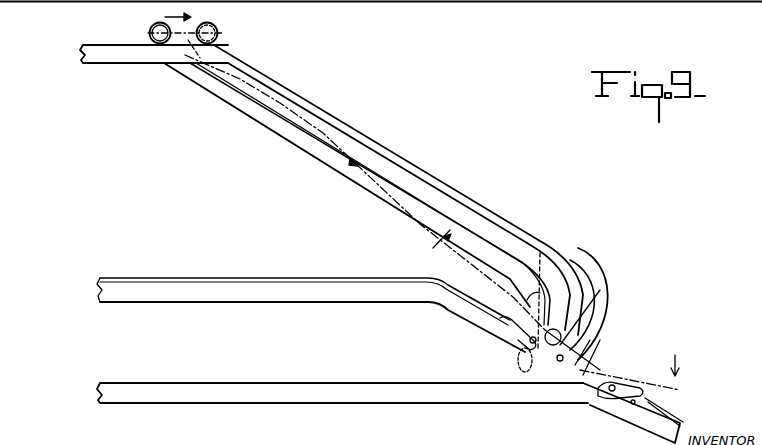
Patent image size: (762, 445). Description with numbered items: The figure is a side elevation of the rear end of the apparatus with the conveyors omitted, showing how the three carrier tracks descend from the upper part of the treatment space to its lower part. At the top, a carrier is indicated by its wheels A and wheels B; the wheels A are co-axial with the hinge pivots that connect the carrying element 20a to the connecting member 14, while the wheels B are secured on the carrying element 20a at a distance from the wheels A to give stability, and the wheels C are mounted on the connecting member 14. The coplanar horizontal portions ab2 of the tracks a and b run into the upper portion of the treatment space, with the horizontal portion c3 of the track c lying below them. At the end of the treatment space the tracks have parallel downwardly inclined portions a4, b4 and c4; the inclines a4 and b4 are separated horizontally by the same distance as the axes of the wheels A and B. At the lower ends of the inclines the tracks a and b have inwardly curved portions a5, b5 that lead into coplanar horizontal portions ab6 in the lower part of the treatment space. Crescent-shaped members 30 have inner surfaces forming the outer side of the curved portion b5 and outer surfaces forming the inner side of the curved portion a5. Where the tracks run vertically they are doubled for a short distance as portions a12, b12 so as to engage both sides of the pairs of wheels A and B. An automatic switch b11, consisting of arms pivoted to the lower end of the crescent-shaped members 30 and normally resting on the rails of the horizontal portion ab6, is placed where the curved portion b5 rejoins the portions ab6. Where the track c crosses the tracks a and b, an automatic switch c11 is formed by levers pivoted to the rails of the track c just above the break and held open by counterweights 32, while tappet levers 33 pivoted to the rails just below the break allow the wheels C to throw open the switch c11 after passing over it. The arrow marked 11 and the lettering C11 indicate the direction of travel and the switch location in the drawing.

The wheels B is at (177, 25).
The wheels A is at (199, 26).
The coplanar horizontal portions ab2 is at (100, 58).
The carrying element 20a is at (177, 40).
The downwardly inclined portion a4 is at (383, 148).
The connecting member 14 is at (310, 123).
The downwardly inclined portion b4 is at (252, 108).
The direction of movement 11 is at (555, 316).
The pivot member C11 is at (538, 255).
The inwardly curved portion b5 is at (547, 283).
The inwardly curved portion a5 is at (577, 273).
The double portion b12 is at (570, 310).
The crescent-shaped members 30 is at (582, 312).
The double portion a12 is at (606, 302).
The automatic switch c11 is at (612, 348).
The tappet levers 33 is at (620, 386).
The downwardly inclined portion c4 is at (463, 308).
The horizontal portion c3 is at (292, 302).
The counterweights 32 is at (510, 328).
The automatic switch b11 is at (560, 345).
The coplanar horizontal portions ab6 is at (345, 404).